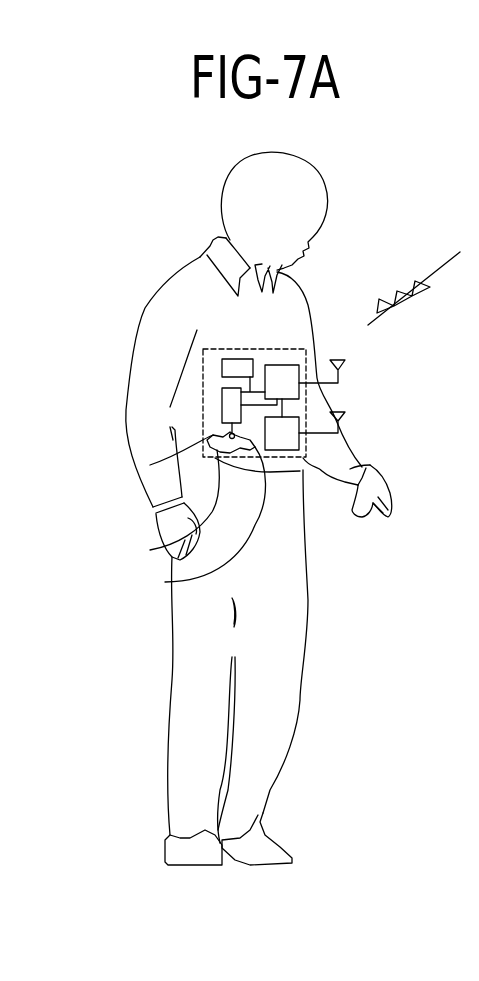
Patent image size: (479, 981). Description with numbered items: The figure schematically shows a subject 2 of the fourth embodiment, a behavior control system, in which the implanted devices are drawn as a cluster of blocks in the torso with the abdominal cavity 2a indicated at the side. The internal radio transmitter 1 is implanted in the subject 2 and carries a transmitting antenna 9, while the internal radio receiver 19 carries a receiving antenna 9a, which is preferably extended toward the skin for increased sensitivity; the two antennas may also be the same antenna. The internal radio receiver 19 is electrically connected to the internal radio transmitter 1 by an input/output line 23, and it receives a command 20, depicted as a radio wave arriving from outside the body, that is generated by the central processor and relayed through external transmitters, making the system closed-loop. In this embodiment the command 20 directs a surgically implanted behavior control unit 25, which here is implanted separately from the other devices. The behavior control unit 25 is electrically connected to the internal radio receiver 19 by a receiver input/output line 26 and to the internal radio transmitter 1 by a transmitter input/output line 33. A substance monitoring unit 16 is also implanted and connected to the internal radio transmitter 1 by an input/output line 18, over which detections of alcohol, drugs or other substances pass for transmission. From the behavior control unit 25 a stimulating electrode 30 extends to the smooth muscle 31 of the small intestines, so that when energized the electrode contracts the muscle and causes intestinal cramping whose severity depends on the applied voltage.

The internal radio transmitter 1 is at (300, 437).
The subject 2 is at (153, 287).
The abdominal cavity 2a is at (345, 480).
The transmitting antenna 9 is at (345, 419).
The receiving antenna 9a is at (346, 366).
The substance monitoring unit 16 is at (237, 358).
The input/output line 18 is at (265, 365).
The internal radio receiver 19 is at (300, 397).
The command 20 is at (376, 302).
The input/output line 23 is at (300, 405).
The behavior control unit 25 is at (221, 410).
The receiver input/output line 26 is at (253, 392).
The stimulating electrode 30 is at (155, 508).
The smooth muscle 31 is at (172, 550).
The transmitter input/output line 33 is at (166, 582).